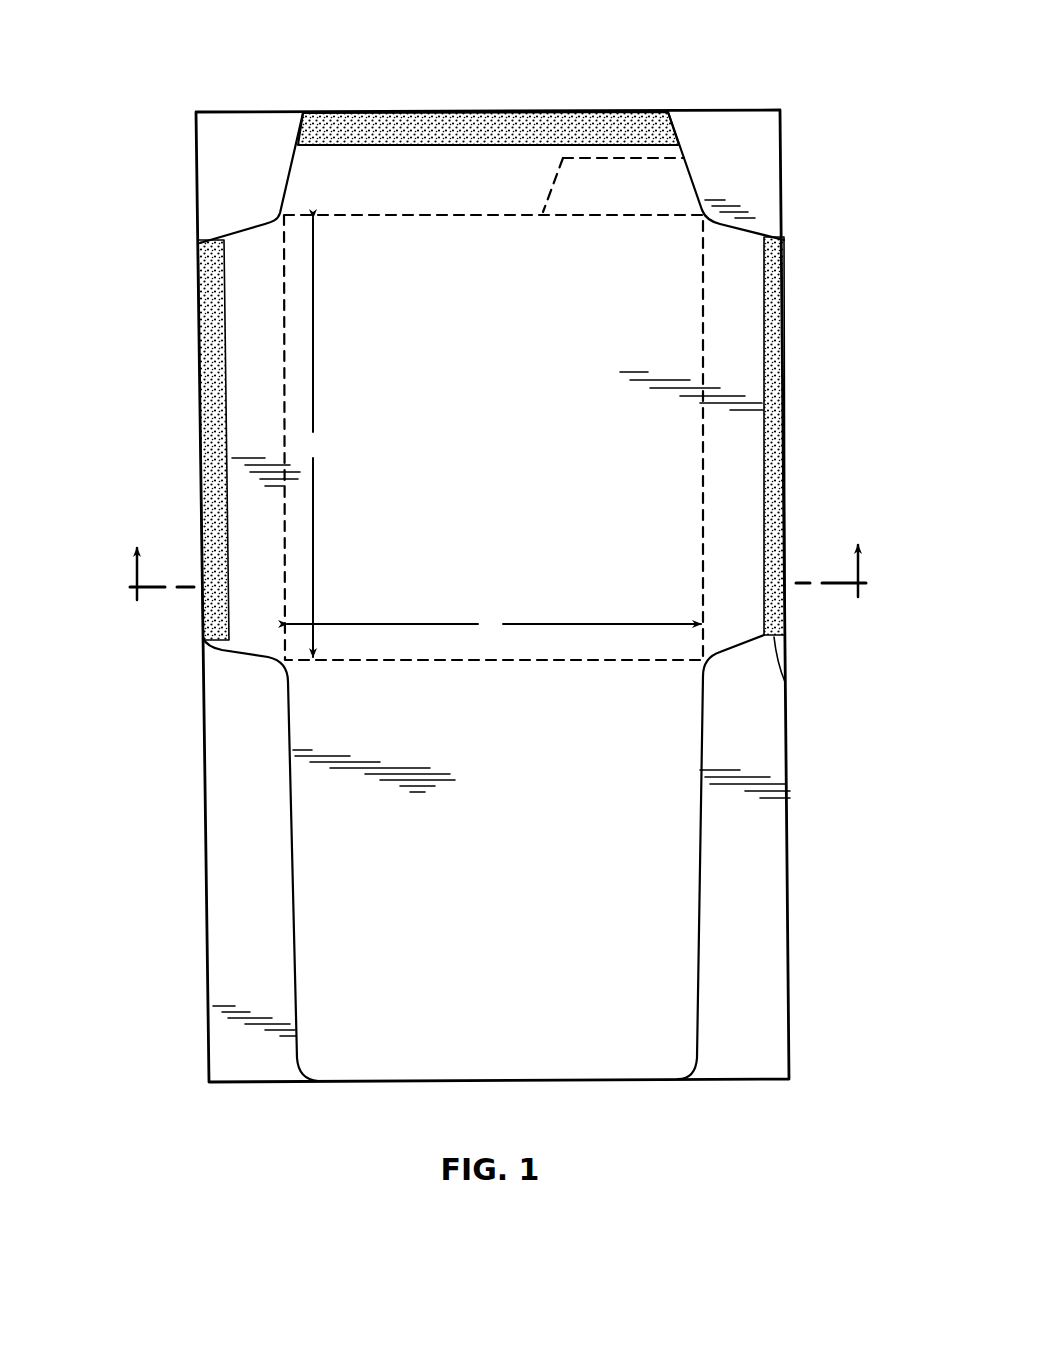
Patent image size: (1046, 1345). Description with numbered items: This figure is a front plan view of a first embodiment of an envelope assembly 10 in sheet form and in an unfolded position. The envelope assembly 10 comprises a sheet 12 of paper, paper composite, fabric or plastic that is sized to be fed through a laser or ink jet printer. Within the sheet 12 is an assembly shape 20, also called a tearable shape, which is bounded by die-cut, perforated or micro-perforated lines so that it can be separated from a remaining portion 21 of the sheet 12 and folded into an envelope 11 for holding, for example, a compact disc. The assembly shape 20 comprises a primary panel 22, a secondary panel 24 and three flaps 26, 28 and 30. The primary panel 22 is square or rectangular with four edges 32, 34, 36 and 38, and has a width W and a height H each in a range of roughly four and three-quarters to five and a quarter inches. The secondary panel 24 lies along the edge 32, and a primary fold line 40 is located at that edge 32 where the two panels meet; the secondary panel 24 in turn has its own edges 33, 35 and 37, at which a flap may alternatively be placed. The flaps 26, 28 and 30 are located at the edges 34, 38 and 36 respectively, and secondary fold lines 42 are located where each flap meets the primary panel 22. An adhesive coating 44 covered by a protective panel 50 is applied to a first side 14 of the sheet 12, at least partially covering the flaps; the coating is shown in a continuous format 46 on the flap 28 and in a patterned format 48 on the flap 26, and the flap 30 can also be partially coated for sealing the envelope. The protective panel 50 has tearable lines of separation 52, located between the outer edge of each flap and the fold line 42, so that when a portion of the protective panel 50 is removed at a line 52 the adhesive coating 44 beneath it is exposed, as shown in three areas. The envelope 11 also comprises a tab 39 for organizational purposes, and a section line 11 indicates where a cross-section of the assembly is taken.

The envelope assembly 10 is at (797, 76).
The envelope 11 is at (497, 572).
The sheet 12 is at (243, 105).
The first side 14 is at (617, 725).
The assembly shape 20 is at (375, 106).
The remaining portion 21 is at (782, 160).
The primary panel 22 is at (493, 437).
The secondary panel 24 is at (497, 797).
The flap 26 is at (253, 636).
The flap 28 is at (732, 642).
The flap 30 is at (305, 178).
The edge 32 is at (388, 662).
The edge 33 is at (297, 910).
The edge 34 is at (277, 514).
The edge 35 is at (598, 1082).
The edge 36 is at (462, 214).
The edge 37 is at (703, 937).
The edge 38 is at (703, 472).
The tab 39 is at (672, 184).
The primary fold line 40 is at (515, 662).
The secondary fold lines 42 is at (520, 210).
The adhesive coating 44 is at (660, 118).
The continuous format 46 is at (786, 322).
The patterned format 48 is at (213, 311).
The protective panel 50 is at (545, 158).
The tearable line of separation 52 is at (292, 118).
The height H is at (313, 437).
The width W is at (494, 624).